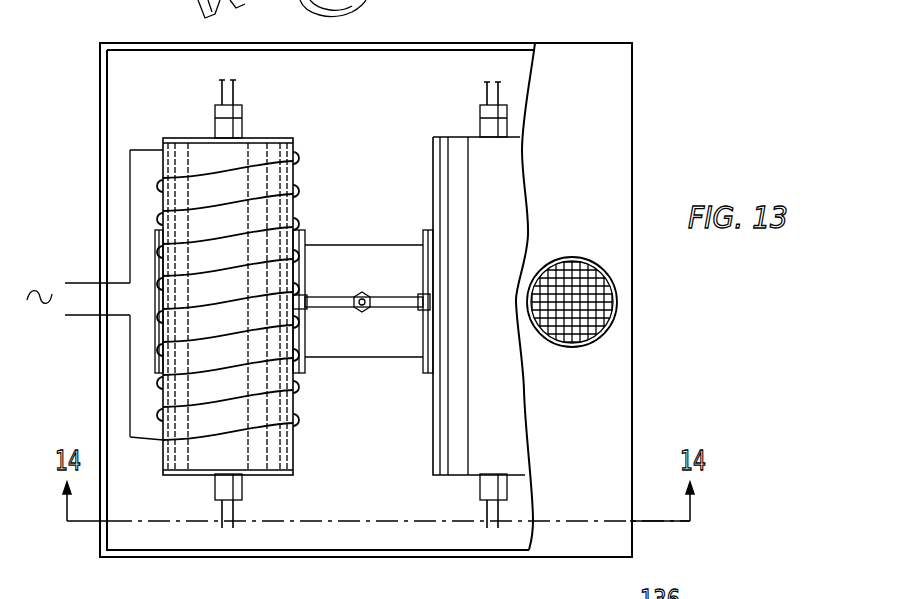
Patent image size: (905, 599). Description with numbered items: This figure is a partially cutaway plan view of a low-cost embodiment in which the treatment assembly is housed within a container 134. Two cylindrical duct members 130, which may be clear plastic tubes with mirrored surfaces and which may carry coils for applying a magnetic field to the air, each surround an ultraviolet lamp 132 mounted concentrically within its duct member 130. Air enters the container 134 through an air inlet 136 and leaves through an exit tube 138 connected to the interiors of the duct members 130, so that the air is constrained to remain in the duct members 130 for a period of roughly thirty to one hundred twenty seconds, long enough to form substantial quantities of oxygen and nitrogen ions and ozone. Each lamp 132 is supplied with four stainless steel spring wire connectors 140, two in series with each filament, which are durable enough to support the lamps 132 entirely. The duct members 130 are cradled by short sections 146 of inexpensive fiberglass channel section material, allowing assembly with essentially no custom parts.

The duct member 130 is at (270, 180).
The ultraviolet lamp 132 is at (242, 118).
The container 134 is at (600, 43).
The air inlet 136 is at (592, 303).
The exit tube 138 is at (363, 310).
The spring wire connector 140 is at (222, 98).
The short section of channel material 146 is at (305, 234).